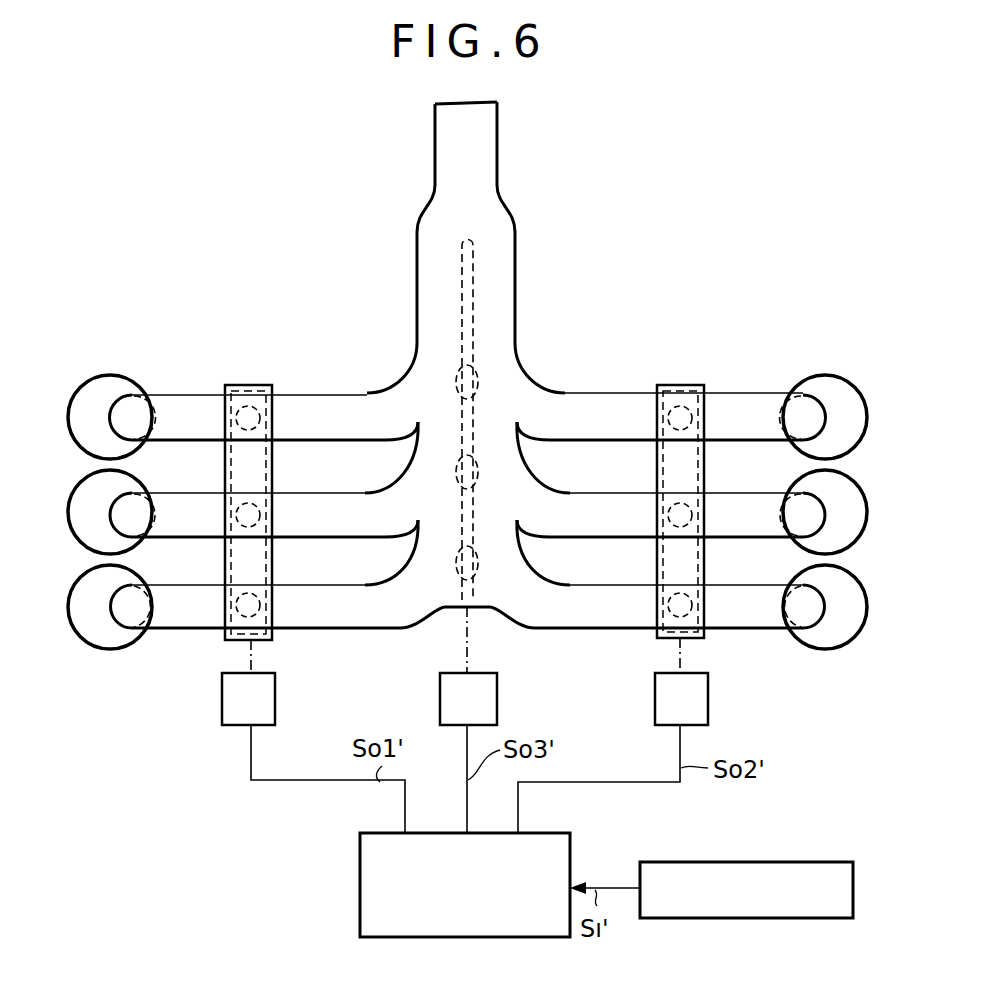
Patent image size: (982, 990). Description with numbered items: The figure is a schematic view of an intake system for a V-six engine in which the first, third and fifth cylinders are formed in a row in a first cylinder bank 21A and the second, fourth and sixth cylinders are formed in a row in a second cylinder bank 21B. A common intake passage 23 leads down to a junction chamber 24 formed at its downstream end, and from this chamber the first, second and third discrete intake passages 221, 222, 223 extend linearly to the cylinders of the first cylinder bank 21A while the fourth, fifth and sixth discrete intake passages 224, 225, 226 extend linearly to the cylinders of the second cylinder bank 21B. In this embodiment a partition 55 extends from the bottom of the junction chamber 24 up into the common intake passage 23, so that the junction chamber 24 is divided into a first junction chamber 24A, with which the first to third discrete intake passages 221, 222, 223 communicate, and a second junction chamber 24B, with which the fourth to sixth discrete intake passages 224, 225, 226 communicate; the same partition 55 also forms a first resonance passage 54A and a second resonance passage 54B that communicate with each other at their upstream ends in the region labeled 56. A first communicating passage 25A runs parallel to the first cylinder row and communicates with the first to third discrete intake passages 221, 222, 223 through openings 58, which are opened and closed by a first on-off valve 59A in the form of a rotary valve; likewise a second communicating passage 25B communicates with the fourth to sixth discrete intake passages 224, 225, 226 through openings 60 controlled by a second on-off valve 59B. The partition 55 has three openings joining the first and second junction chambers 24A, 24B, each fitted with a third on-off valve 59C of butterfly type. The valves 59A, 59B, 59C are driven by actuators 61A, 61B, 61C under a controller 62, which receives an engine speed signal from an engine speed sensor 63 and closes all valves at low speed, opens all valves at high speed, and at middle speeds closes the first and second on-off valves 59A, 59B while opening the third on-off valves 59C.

The common intake passage 23 is at (512, 150).
The collector chamber 56 is at (483, 213).
The partition 55 is at (470, 291).
The first resonance passage 54A is at (433, 347).
The second resonance passage 54B is at (510, 345).
The third on-off valves 59C is at (480, 390).
The first cylinder bank 21A is at (142, 355).
The second cylinder bank 21B is at (820, 355).
The third discrete intake passage 223 is at (183, 405).
The second discrete intake passage 222 is at (208, 523).
The first discrete intake passage 221 is at (178, 615).
The sixth discrete intake passage 226 is at (742, 405).
The fifth discrete intake passage 225 is at (742, 525).
The fourth discrete intake passage 224 is at (758, 617).
The junction chamber 24 is at (506, 446).
The first junction chamber 24A is at (452, 513).
The second junction chamber 24B is at (530, 596).
The first communicating passage 25A is at (282, 470).
The second communicating passage 25B is at (650, 466).
The openings 58 is at (262, 522).
The openings 60 is at (672, 592).
The first on-off valve 59A is at (265, 640).
The second on-off valve 59B is at (665, 638).
The actuator 61A is at (275, 708).
The actuator 61B is at (708, 708).
The actuator 61C is at (497, 708).
The controller 62 is at (570, 848).
The engine speed sensor 63 is at (780, 862).